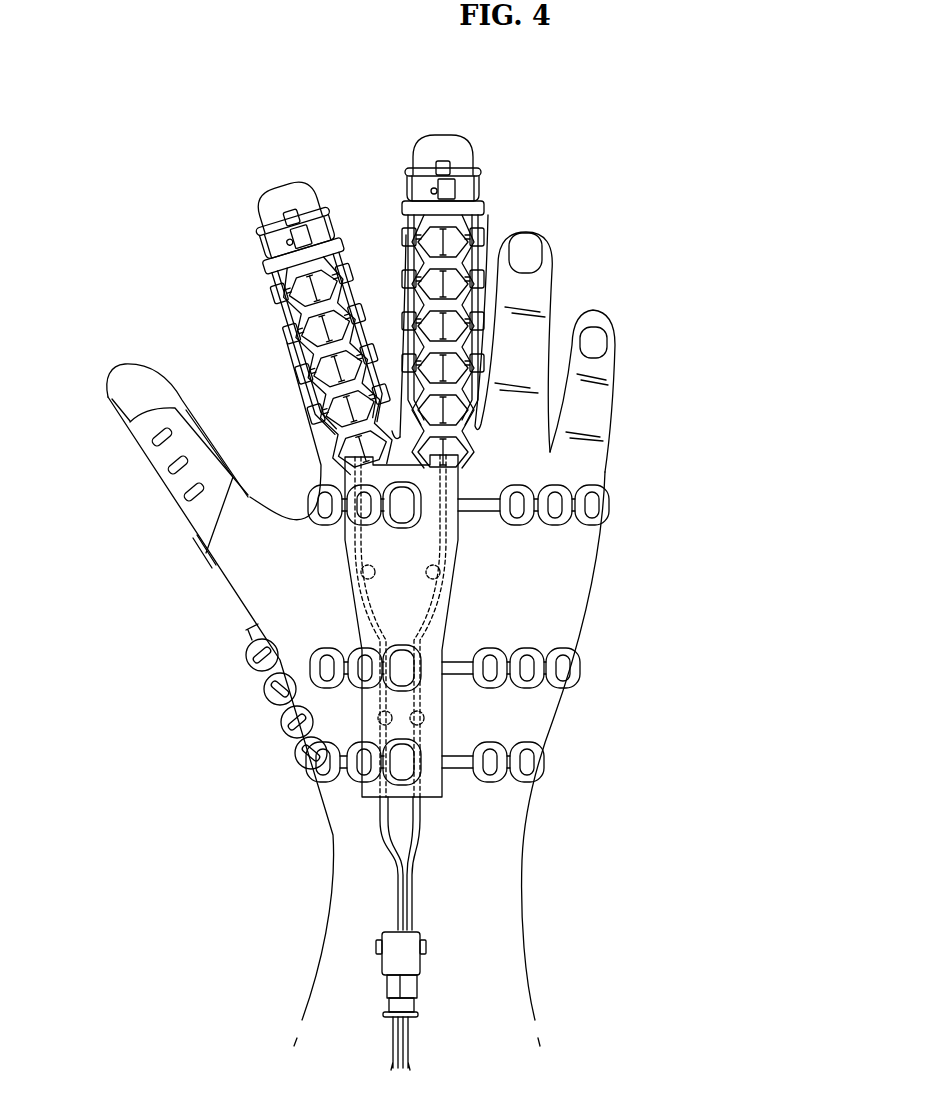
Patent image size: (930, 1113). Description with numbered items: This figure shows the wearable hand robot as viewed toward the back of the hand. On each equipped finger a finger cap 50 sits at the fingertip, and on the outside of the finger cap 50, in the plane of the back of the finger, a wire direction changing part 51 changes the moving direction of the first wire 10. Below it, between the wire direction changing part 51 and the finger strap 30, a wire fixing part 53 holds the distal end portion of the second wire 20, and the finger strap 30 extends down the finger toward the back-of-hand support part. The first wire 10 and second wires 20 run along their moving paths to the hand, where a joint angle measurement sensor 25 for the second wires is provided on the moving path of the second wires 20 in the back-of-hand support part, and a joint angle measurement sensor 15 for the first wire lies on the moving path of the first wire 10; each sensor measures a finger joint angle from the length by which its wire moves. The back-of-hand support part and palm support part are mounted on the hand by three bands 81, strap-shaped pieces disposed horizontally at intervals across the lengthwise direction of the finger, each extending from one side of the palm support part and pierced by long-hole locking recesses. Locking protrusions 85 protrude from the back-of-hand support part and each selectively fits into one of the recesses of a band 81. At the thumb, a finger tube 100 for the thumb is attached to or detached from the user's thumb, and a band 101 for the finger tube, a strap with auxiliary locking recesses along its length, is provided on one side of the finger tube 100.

The first wire 10 is at (487, 160).
The joint angle measurement sensor for the first wire 15 is at (415, 720).
The second wire 20 is at (440, 234).
The joint angle measurement sensor for the second wires 25 is at (428, 570).
The finger strap 30 is at (500, 226).
The finger cap 50 is at (422, 126).
The wire direction changing part 51 is at (443, 162).
The wire fixing part 53 is at (455, 186).
The band 81 is at (605, 505).
The locking protrusion 85 is at (407, 672).
The finger tube for a thumb 100 is at (162, 493).
The band for the finger tube 101 is at (235, 645).